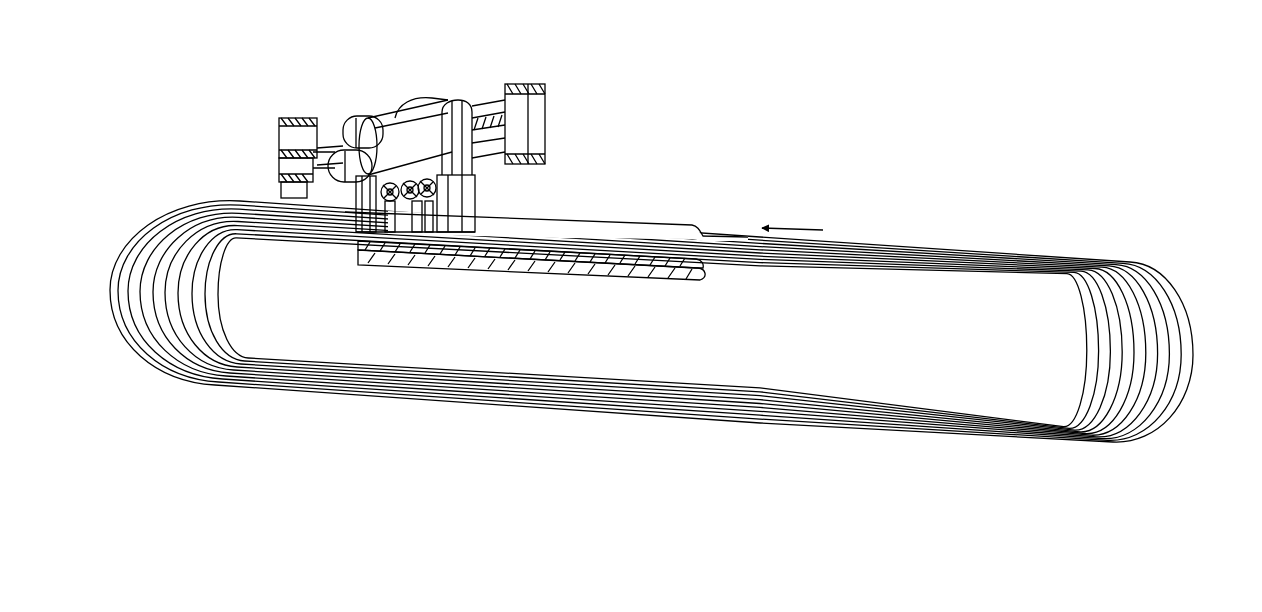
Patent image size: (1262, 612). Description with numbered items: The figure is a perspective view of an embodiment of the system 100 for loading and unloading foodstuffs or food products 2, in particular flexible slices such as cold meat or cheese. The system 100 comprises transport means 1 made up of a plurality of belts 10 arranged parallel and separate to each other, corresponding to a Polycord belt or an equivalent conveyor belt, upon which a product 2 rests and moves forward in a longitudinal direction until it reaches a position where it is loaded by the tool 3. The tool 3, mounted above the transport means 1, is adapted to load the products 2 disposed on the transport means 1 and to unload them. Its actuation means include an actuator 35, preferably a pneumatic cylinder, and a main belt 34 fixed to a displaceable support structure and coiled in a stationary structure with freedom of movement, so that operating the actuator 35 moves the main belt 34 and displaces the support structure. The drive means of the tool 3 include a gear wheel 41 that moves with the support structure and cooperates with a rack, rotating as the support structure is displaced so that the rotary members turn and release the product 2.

The system 100 is at (727, 124).
The transport means 1 is at (1005, 248).
The belts 10 is at (1047, 290).
The food product 2 is at (572, 226).
The tool 3 is at (431, 82).
The main belt 34 is at (524, 82).
The actuator 35 is at (342, 127).
The gear wheel 41 is at (375, 218).